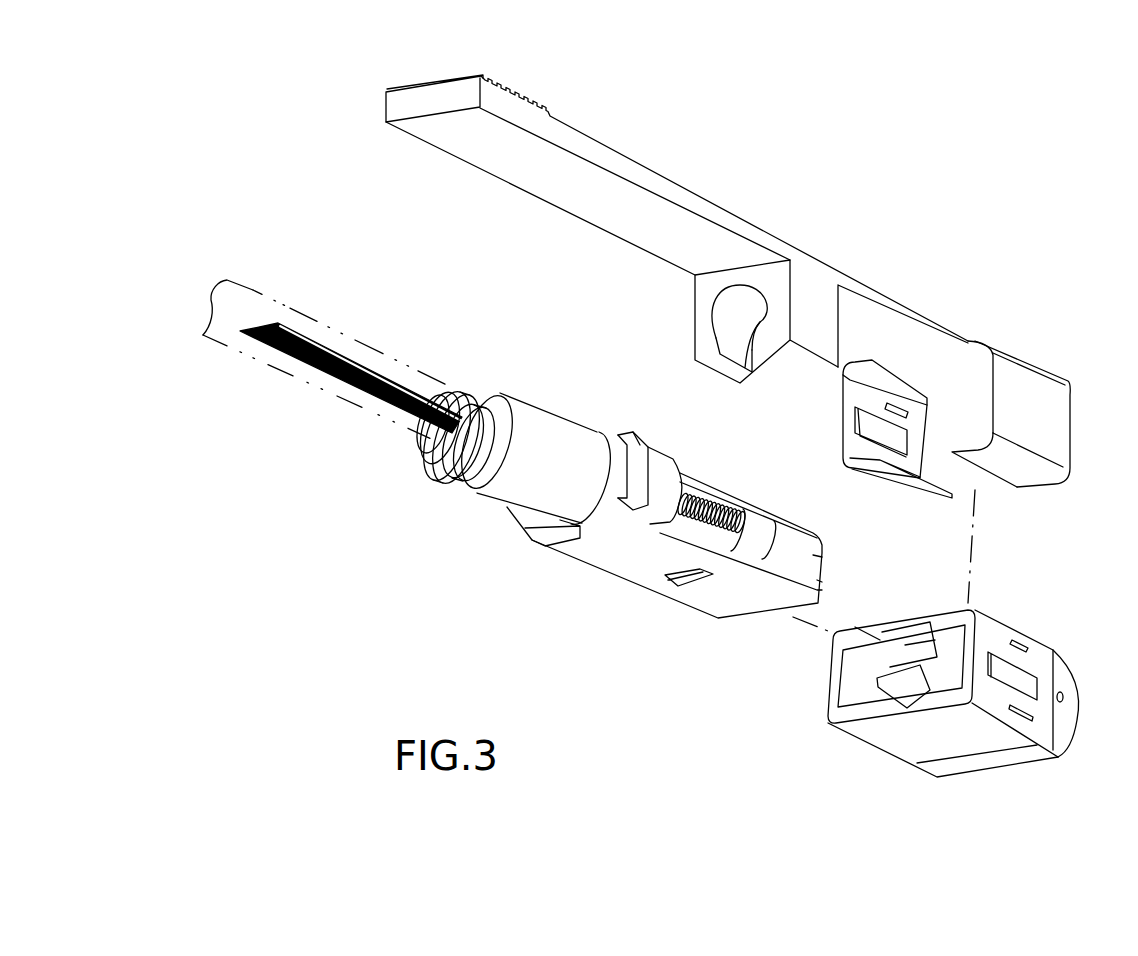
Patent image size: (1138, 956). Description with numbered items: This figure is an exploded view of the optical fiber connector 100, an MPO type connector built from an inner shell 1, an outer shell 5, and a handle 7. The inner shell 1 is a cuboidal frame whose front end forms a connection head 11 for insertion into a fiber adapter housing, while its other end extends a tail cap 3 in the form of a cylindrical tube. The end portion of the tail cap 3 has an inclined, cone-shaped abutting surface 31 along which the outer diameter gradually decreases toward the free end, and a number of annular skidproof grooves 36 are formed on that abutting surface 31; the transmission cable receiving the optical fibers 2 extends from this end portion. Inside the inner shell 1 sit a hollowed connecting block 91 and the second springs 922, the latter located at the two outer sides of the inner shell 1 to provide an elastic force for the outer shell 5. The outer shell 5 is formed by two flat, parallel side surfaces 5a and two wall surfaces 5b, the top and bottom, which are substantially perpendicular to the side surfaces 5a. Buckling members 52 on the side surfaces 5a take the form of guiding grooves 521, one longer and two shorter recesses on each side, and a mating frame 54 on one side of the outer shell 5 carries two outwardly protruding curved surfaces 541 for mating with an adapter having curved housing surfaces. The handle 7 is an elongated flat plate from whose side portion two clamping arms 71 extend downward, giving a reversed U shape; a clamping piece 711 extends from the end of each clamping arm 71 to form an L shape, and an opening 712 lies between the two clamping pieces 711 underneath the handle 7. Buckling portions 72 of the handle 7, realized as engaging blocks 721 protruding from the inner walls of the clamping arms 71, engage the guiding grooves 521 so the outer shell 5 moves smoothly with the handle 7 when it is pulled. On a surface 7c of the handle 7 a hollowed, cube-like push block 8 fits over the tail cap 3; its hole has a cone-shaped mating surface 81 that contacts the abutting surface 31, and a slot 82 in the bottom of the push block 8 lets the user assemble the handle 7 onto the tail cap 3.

The inner shell 1 is at (642, 560).
The connection head 11 is at (773, 603).
The optical fibers 2 is at (325, 367).
The tail cap 3 is at (550, 437).
The abutting surface 31 is at (482, 393).
The skidproof grooves 36 is at (471, 479).
The outer shell 5 is at (870, 748).
The side surfaces 5a is at (997, 697).
The wall surfaces 5b is at (925, 735).
The buckling members 52 is at (1050, 590).
The guiding groove 521 is at (1018, 680).
The mating frame 54 is at (1077, 680).
The curved surfaces 541 is at (1077, 723).
The handle 7 is at (618, 165).
The surface of the handle 7c is at (698, 240).
The clamping arms 71 is at (1025, 418).
The clamping piece 711 is at (1010, 473).
The buckling portions 72 is at (906, 229).
The engaging block 721 is at (902, 407).
The opening 712 is at (920, 500).
The push block 8 is at (808, 308).
The mating surface 81 is at (732, 322).
The slot 82 is at (760, 373).
The connecting block 91 is at (577, 535).
The second springs 922 is at (722, 500).
The optical fiber connector 100 is at (1126, 275).